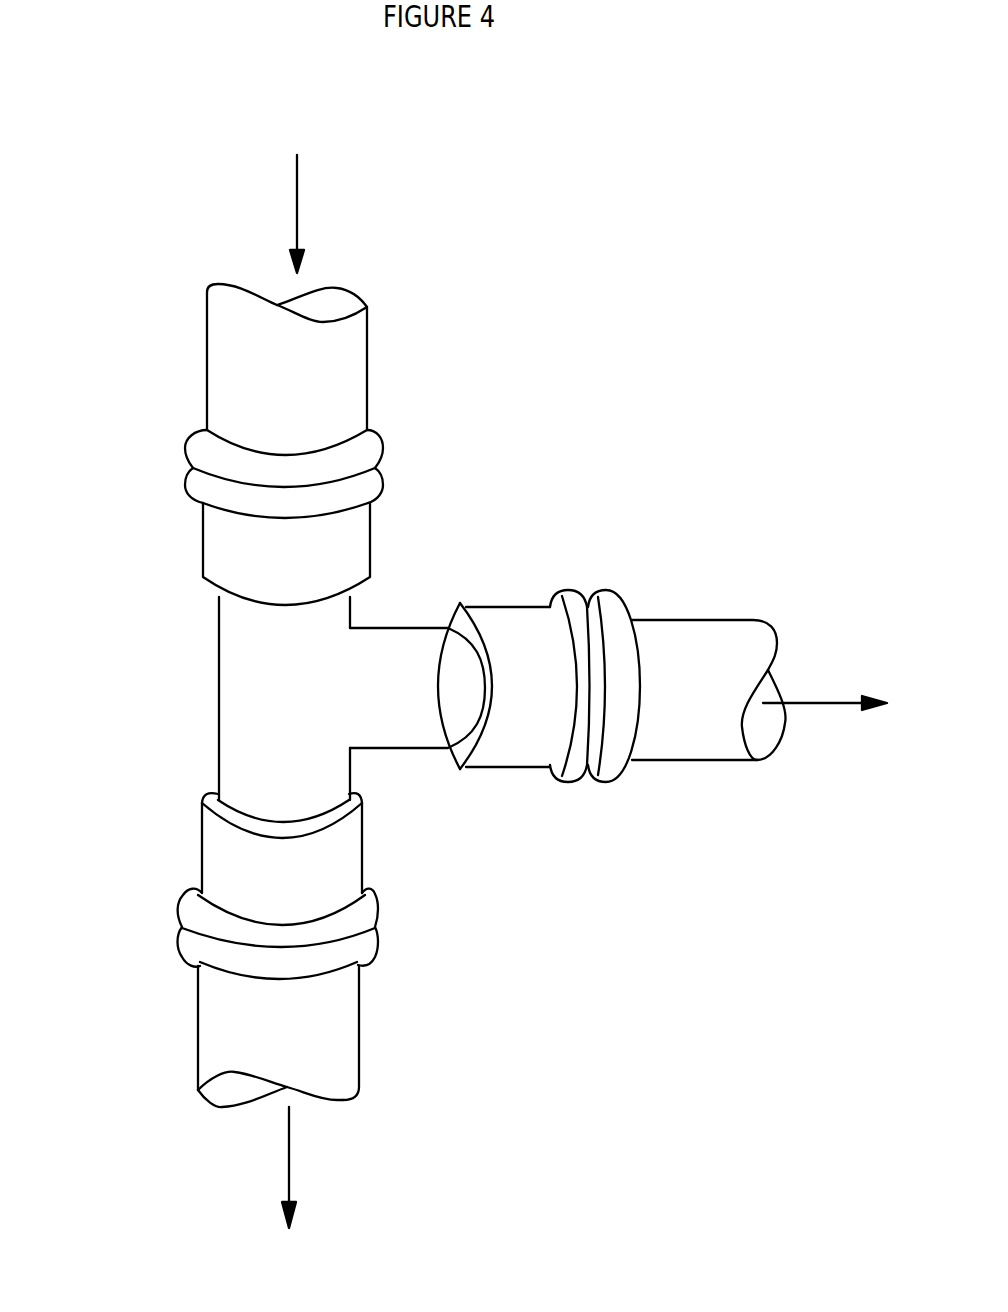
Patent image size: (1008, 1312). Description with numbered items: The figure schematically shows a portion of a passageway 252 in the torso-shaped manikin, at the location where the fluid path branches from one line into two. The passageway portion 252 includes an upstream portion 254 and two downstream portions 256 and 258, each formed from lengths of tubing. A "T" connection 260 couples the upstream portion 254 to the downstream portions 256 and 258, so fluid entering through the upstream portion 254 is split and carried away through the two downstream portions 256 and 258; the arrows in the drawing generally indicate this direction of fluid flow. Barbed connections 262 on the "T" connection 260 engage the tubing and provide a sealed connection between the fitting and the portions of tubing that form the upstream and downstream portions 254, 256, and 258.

The passageway portion 252 is at (737, 477).
The upstream portion 254 is at (243, 358).
The downstream portion 256 is at (677, 733).
The downstream portion 258 is at (316, 1042).
The "T" connection 260 is at (240, 690).
The barbed connections 262 is at (388, 487).